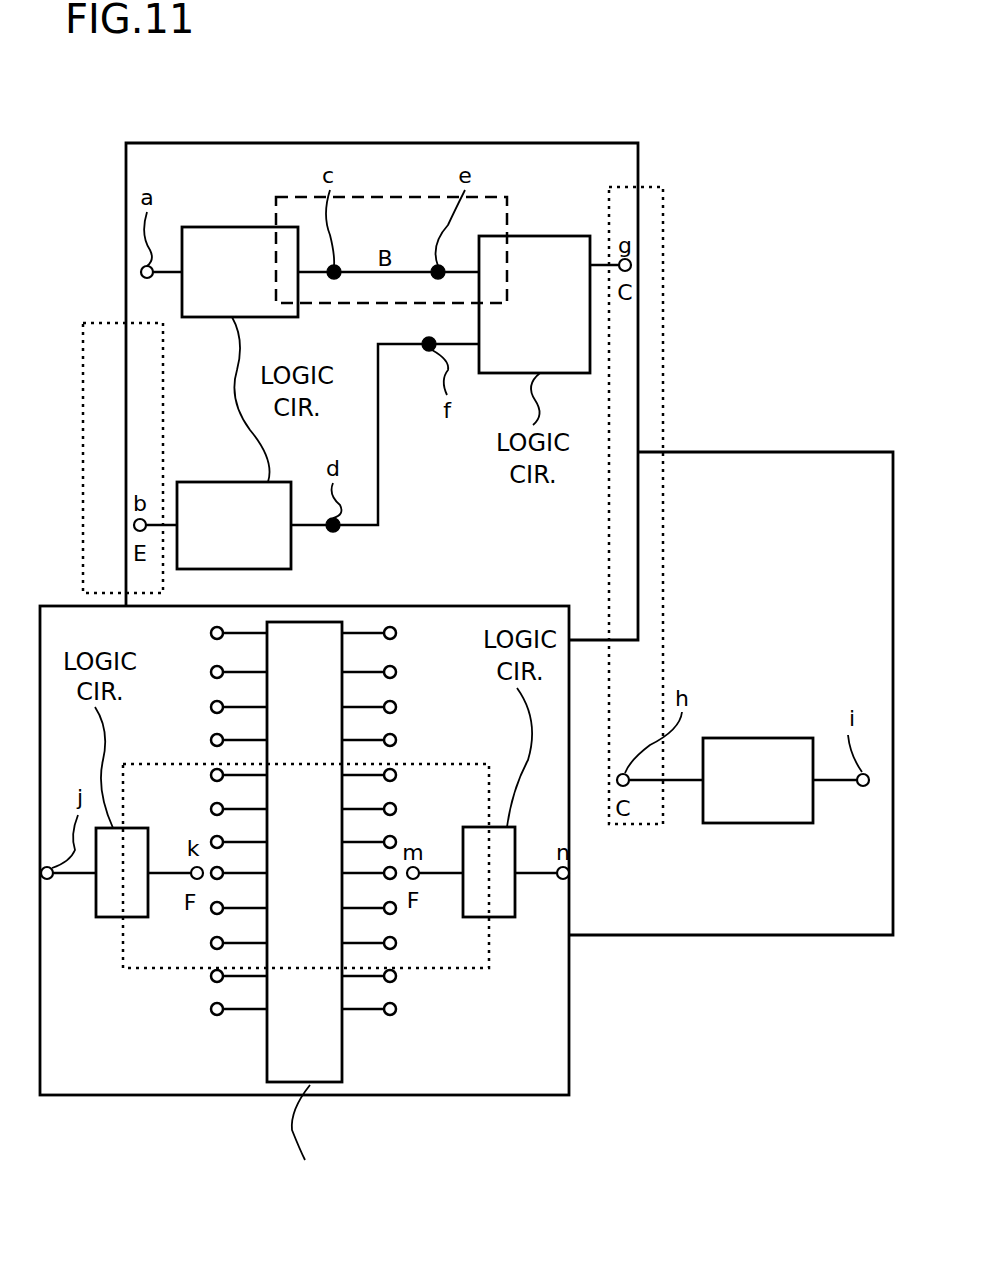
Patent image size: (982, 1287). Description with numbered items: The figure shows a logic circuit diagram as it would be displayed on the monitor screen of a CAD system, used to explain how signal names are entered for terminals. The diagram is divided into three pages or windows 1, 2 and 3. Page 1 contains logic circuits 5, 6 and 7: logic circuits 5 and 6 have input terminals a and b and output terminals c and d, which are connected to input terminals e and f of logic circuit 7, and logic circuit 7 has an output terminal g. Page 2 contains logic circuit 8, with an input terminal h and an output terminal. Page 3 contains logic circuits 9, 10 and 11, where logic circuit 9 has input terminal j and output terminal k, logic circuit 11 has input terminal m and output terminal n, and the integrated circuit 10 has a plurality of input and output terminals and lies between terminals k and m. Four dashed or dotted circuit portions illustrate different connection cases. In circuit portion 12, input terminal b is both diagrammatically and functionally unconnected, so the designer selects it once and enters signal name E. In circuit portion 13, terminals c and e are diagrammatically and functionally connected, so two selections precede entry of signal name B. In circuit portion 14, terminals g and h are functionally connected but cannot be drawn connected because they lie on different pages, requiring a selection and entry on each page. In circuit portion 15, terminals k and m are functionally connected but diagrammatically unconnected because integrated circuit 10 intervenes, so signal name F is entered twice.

The page 1 is at (566, 143).
The page 2 is at (758, 452).
The page 3 is at (569, 1053).
The logic circuit 5 is at (232, 242).
The logic circuit 6 is at (227, 507).
The logic circuit 7 is at (557, 263).
The logic circuit 8 is at (745, 738).
The logic circuit 9 is at (108, 900).
The integrated circuit 10 is at (292, 1052).
The logic circuit 11 is at (508, 917).
The circuit portion 12 is at (70, 392).
The circuit portion 13 is at (392, 197).
The circuit portion 14 is at (663, 236).
The circuit portion 15 is at (443, 764).